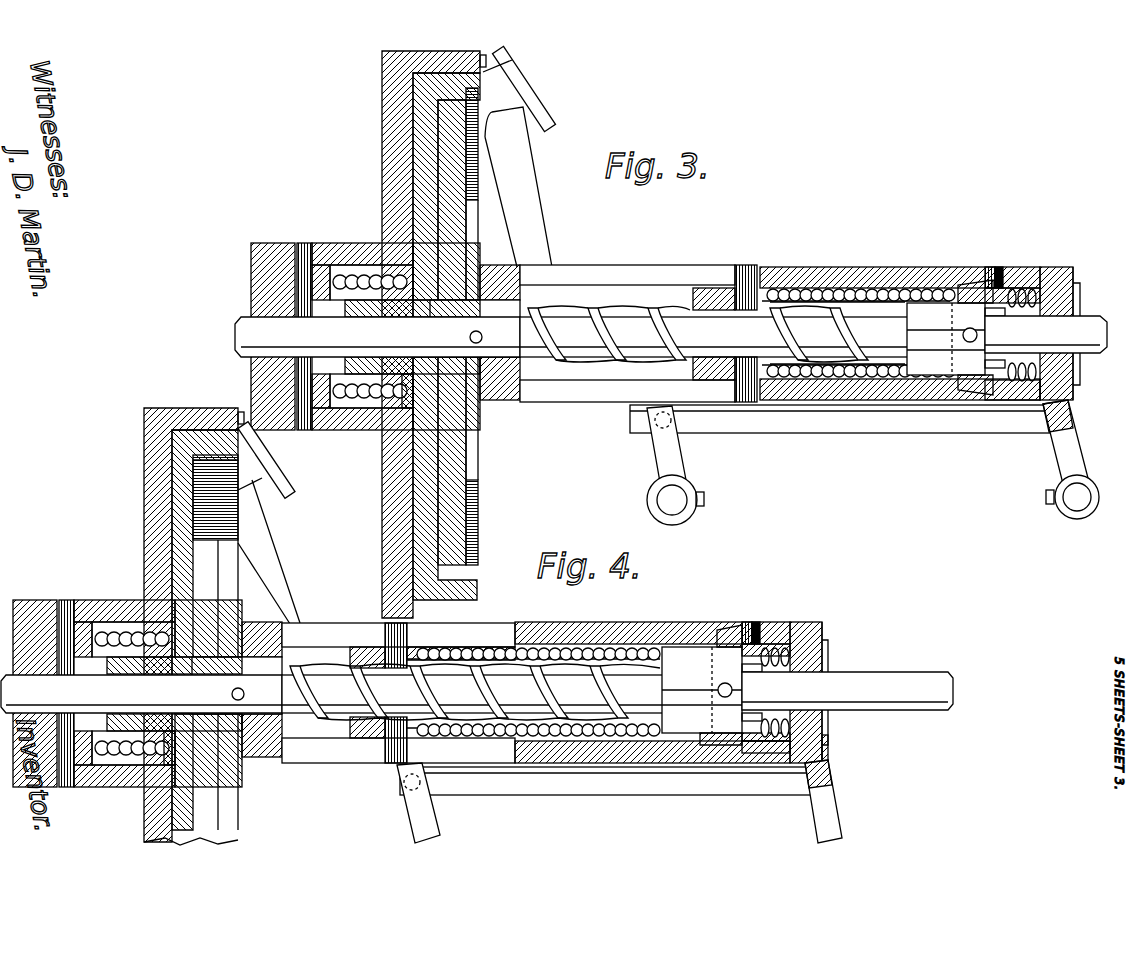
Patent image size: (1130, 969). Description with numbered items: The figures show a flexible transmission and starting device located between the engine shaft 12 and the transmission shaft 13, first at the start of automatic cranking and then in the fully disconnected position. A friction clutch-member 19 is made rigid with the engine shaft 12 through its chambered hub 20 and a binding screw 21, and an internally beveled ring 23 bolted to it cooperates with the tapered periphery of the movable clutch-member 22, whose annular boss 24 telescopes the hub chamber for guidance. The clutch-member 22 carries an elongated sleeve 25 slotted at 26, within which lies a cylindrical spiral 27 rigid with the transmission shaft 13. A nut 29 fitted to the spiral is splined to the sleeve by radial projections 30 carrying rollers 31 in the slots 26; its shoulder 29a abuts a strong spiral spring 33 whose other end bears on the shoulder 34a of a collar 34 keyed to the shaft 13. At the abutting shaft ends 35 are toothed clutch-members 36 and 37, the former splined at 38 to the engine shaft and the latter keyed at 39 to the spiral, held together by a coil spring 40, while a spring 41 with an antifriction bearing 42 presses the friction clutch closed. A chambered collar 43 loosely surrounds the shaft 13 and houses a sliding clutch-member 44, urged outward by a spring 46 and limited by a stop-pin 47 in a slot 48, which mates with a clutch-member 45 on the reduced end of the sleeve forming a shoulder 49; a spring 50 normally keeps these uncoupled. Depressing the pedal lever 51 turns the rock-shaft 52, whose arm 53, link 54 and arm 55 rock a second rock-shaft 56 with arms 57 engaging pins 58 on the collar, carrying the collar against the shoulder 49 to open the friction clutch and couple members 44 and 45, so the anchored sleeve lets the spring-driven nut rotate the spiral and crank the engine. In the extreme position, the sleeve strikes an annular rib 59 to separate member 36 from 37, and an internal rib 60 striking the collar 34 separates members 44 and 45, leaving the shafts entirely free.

In FIG. 3, the engine shaft 12 is at (236, 345).
In FIG. 4, the engine shaft 12 is at (141, 694).
In FIG. 3, the transmission shaft 13 is at (1100, 355).
In FIG. 4, the transmission shaft 13 is at (905, 710).
In FIG. 3, the clutch-member 19 is at (385, 128).
In FIG. 4, the clutch-member 19 is at (148, 476).
In FIG. 3, the hub 20 is at (263, 244).
In FIG. 4, the hub 20 is at (24, 600).
In FIG. 3, the binding screw 21 is at (302, 244).
In FIG. 4, the binding screw 21 is at (64, 601).
In FIG. 3, the movable clutch-member 22 is at (483, 168).
In FIG. 4, the movable clutch-member 22 is at (238, 522).
In FIG. 3, the internally beveled ring 23 is at (495, 85).
In FIG. 4, the internally beveled ring 23 is at (245, 446).
In FIG. 3, the annular boss 24 is at (370, 250).
In FIG. 4, the annular boss 24 is at (126, 615).
In FIG. 3, the sleeve 25 is at (836, 270).
In FIG. 4, the sleeve 25 is at (628, 625).
In FIG. 3, the slots 26 is at (676, 268).
In FIG. 4, the slots 26 is at (334, 635).
In FIG. 3, the cylindrical spiral 27 is at (840, 400).
In FIG. 4, the cylindrical spiral 27 is at (477, 692).
In FIG. 3, the nut 29 is at (875, 285).
In FIG. 4, the nut 29 is at (510, 648).
In FIG. 3, the annular shoulder 29a is at (790, 380).
In FIG. 4, the annular shoulder 29a is at (380, 648).
In FIG. 3, the radial projections 30 is at (746, 266).
In FIG. 4, the radial projections 30 is at (396, 693).
In FIG. 3, the rollers 31 is at (770, 272).
In FIG. 4, the rollers 31 is at (362, 646).
In FIG. 3, the spiral spring 33 is at (822, 300).
In FIG. 3, the collar 34 is at (930, 360).
In FIG. 4, the collar 34 is at (680, 715).
In FIG. 3, the annular shoulder 34a is at (950, 305).
In FIG. 4, the annular shoulder 34a is at (705, 665).
In FIG. 3, the abutting ends 35 is at (480, 343).
In FIG. 4, the abutting ends 35 is at (242, 700).
In FIG. 3, the toothed clutch-member 36 is at (362, 400).
In FIG. 4, the toothed clutch-member 36 is at (120, 758).
In FIG. 3, the toothed clutch-member 37 is at (478, 270).
In FIG. 4, the toothed clutch-member 37 is at (262, 606).
In FIG. 3, the spline 38 is at (330, 392).
In FIG. 4, the spline 38 is at (92, 750).
In FIG. 3, the key 39 is at (468, 360).
In FIG. 4, the key 39 is at (232, 714).
In FIG. 3, the coil spring 40 is at (345, 364).
In FIG. 4, the coil spring 40 is at (125, 672).
In FIG. 3, the spring 41 is at (352, 268).
In FIG. 4, the spring 41 is at (106, 628).
In FIG. 3, the antifriction bearing 42 is at (320, 262).
In FIG. 4, the antifriction bearing 42 is at (82, 620).
In FIG. 3, the collar 43 is at (1050, 270).
In FIG. 4, the collar 43 is at (782, 625).
In FIG. 3, the sliding clutch-member 44 is at (1022, 288).
In FIG. 4, the sliding clutch-member 44 is at (775, 645).
In FIG. 3, the clutch-member 45 is at (965, 283).
In FIG. 4, the clutch-member 45 is at (705, 746).
In FIG. 3, the spring 46 is at (1035, 400).
In FIG. 4, the spring 46 is at (780, 755).
In FIG. 3, the stop-pin 47 is at (989, 267).
In FIG. 4, the stop-pin 47 is at (748, 622).
In FIG. 3, the slot 48 is at (999, 267).
In FIG. 4, the slot 48 is at (755, 622).
In FIG. 3, the annular shoulder 49 is at (965, 395).
In FIG. 4, the annular shoulder 49 is at (700, 745).
In FIG. 3, the spring 50 is at (1074, 284).
In FIG. 4, the spring 50 is at (825, 645).
In FIG. 3, the pedal lever 51 is at (522, 226).
In FIG. 4, the pedal lever 51 is at (258, 565).
In FIG. 3, the rock-shaft 52 is at (688, 505).
In FIG. 3, the arm 53 is at (685, 458).
In FIG. 4, the arm 53 is at (438, 803).
In FIG. 3, the link 54 is at (880, 433).
In FIG. 4, the link 54 is at (540, 783).
In FIG. 3, the arm 55 is at (1055, 470).
In FIG. 4, the arm 55 is at (840, 803).
In FIG. 3, the second rock-shaft 56 is at (1068, 507).
In FIG. 4, the arms 57 is at (828, 740).
In FIG. 3, the pins 58 is at (1050, 330).
In FIG. 4, the pins 58 is at (805, 688).
In FIG. 3, the annular rib 59 is at (405, 402).
In FIG. 4, the annular rib 59 is at (165, 760).
In FIG. 3, the internal rib 60 is at (1000, 395).
In FIG. 4, the internal rib 60 is at (758, 745).